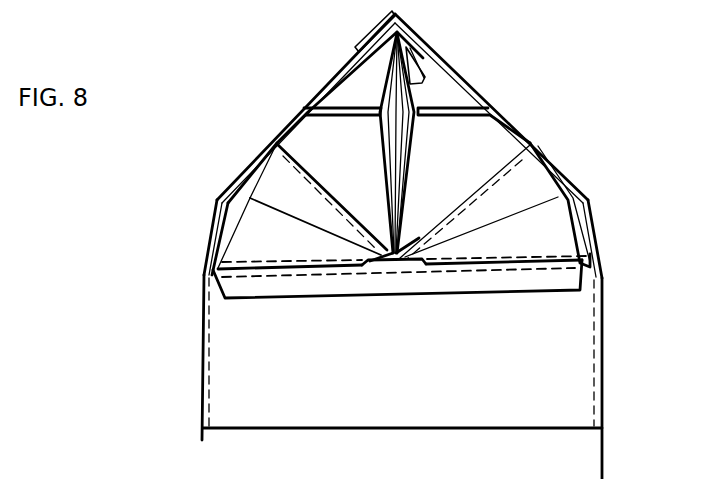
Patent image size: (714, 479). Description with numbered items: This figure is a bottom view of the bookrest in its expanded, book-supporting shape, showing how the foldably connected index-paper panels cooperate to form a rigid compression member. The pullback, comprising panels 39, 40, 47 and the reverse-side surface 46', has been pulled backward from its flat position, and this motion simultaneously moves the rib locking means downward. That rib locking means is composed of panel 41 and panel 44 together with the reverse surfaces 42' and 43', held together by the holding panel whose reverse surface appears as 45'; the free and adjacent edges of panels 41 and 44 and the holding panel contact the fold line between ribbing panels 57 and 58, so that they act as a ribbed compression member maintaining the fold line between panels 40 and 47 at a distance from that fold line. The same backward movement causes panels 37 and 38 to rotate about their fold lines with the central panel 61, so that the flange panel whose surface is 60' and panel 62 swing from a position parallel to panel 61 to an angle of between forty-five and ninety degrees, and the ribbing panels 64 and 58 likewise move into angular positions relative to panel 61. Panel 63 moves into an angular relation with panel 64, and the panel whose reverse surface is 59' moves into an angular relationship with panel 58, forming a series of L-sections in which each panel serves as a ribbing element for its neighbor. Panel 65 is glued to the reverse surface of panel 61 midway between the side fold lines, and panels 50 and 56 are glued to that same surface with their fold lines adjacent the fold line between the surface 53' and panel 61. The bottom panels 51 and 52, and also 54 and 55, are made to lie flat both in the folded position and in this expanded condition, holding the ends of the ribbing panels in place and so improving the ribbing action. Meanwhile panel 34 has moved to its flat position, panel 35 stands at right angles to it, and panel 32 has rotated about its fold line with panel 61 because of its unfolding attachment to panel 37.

The panel 32 is at (202, 312).
The panel 34 is at (402, 367).
The panel 35 is at (603, 303).
The panel 37 is at (210, 225).
The panel 38 is at (598, 214).
The pullback panel 39 is at (316, 95).
The pullback panel 40 is at (476, 83).
The rib locking panel 41 is at (382, 156).
The reverse surface of rib locking panel 42' is at (337, 87).
The reverse surface of rib locking panel 43' is at (463, 87).
The rib locking panel 44 is at (416, 139).
The reverse surface of holding panel 45' is at (420, 143).
The reverse surface of pullback panel 46' is at (429, 50).
The pullback panel 47 is at (369, 42).
The panel 50 is at (318, 259).
The bottom panel 51 is at (264, 247).
The bottom panel 52 is at (294, 202).
The reverse surface of panel 53' is at (397, 291).
The bottom panel 54 is at (534, 200).
The bottom panel 55 is at (555, 244).
The panel 56 is at (505, 258).
The ribbing panel 57 is at (412, 238).
The ribbing panel 58 is at (361, 214).
The reverse surface of ribbing panel 59' is at (245, 173).
The reverse surface of ribbing panel 60' is at (200, 239).
The central panel 61 is at (373, 275).
The ribbing panel 62 is at (582, 238).
The ribbing panel 63 is at (567, 192).
The ribbing panel 64 is at (489, 189).
The ribbing panel 65 is at (393, 266).